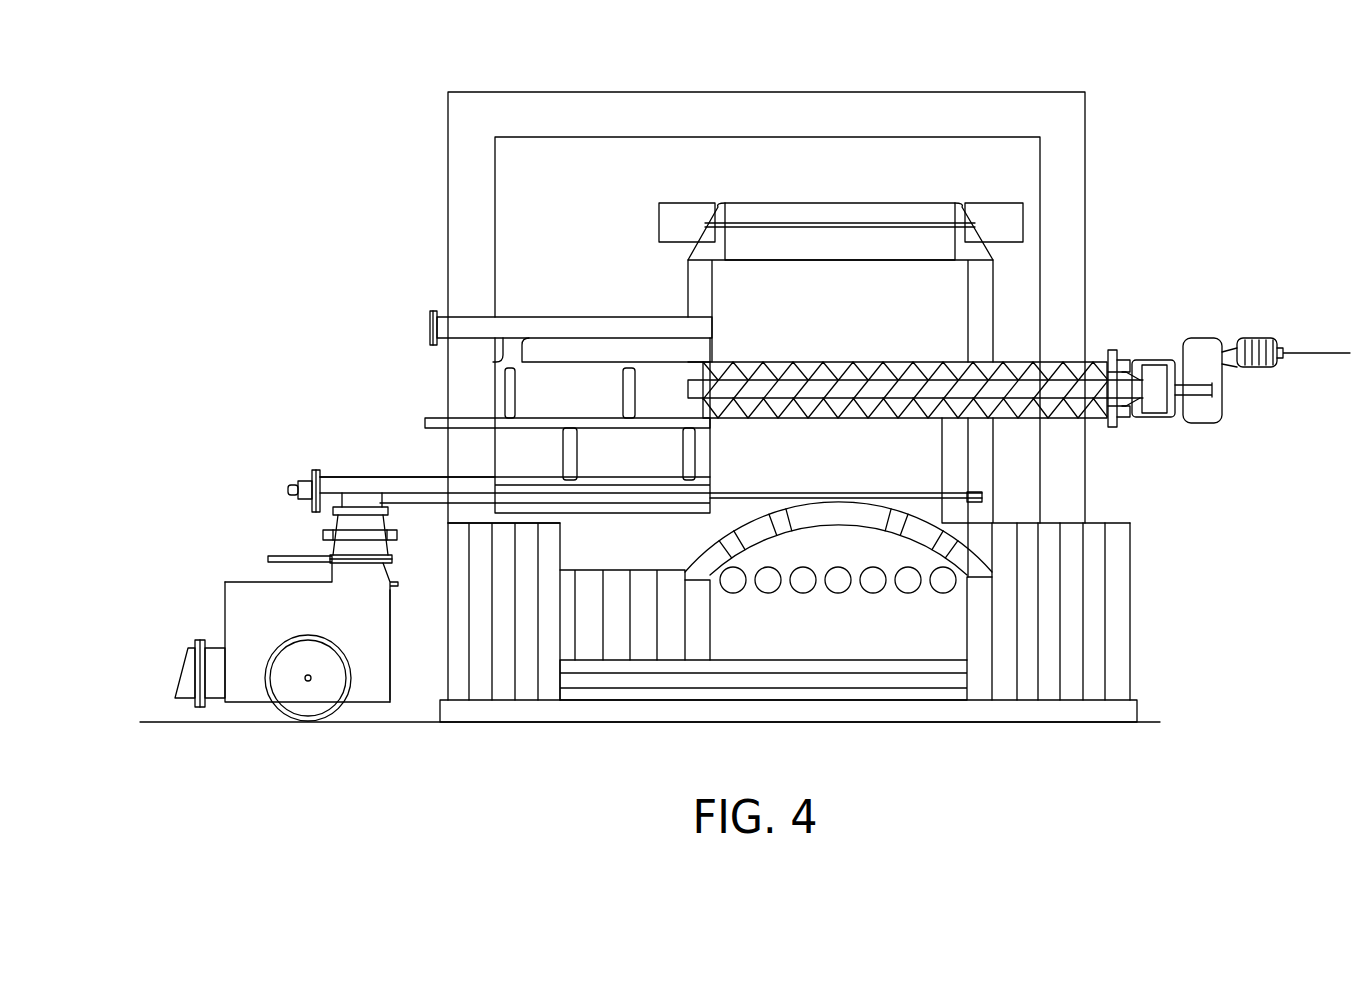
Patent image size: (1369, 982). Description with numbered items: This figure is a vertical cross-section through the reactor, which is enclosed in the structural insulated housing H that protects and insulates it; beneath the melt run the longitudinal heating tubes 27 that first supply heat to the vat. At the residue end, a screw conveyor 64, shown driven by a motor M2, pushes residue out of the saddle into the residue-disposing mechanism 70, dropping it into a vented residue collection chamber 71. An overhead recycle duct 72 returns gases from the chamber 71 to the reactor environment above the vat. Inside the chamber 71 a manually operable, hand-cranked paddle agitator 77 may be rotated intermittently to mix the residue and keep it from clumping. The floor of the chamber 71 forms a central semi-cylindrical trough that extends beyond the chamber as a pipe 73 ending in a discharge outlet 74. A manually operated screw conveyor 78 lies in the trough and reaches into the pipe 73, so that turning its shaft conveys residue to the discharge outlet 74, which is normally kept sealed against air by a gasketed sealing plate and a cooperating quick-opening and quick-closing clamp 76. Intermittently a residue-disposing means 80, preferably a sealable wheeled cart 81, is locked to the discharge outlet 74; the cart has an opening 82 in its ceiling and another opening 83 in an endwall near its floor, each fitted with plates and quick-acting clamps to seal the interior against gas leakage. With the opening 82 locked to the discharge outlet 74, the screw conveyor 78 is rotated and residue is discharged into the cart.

The insulated housing H is at (446, 117).
The longitudinal heating tubes 27 is at (735, 594).
The screw conveyor 64 is at (878, 360).
The motor M2 is at (1198, 338).
The residue-disposing mechanism 70 is at (399, 477).
The residue collection chamber 71 is at (515, 450).
The overhead recycle duct 72 is at (578, 324).
The pipe 73 is at (360, 476).
The discharge outlet 74 is at (325, 532).
The quick-opening and quick-closing clamp 76 is at (270, 556).
The paddle agitator 77 is at (624, 395).
The screw conveyor 78 is at (423, 500).
The residue-disposing means 80 is at (209, 598).
The wheeled cart 81 is at (250, 704).
The opening 82 is at (392, 660).
The opening 83 is at (178, 667).